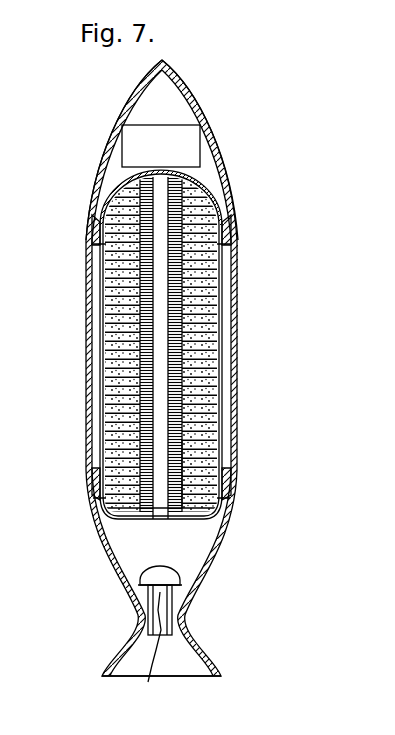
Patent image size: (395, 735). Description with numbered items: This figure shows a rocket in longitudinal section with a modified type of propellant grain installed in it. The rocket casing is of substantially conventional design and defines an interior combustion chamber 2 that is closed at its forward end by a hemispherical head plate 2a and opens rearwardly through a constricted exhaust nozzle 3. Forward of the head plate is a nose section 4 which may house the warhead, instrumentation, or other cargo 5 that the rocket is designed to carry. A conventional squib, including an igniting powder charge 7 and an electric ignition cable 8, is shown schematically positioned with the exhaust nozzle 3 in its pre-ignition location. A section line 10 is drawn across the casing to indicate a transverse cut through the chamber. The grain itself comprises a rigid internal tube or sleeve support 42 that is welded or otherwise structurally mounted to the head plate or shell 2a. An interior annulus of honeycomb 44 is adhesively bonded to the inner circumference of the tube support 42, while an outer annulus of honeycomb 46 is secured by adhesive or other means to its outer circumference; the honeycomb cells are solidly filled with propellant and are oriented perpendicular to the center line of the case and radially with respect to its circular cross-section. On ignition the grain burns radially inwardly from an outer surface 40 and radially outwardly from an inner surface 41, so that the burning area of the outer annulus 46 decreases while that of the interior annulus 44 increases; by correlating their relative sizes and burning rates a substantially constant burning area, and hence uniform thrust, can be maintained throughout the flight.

The combustion chamber 2 is at (240, 416).
The hemispherical head plate 2a is at (203, 183).
The constricted exhaust nozzle 3 is at (182, 620).
The nose section 4 is at (186, 98).
The cargo 5 is at (193, 151).
The igniting powder charge 7 is at (171, 573).
The electric ignition cable 8 is at (148, 682).
The section line 10 is at (265, 530).
The outer surface 40 is at (216, 405).
The inner surface 41 is at (161, 512).
The tube support 42 is at (187, 290).
The interior annulus of honeycomb 44 is at (186, 338).
The outer annulus of honeycomb 46 is at (205, 455).